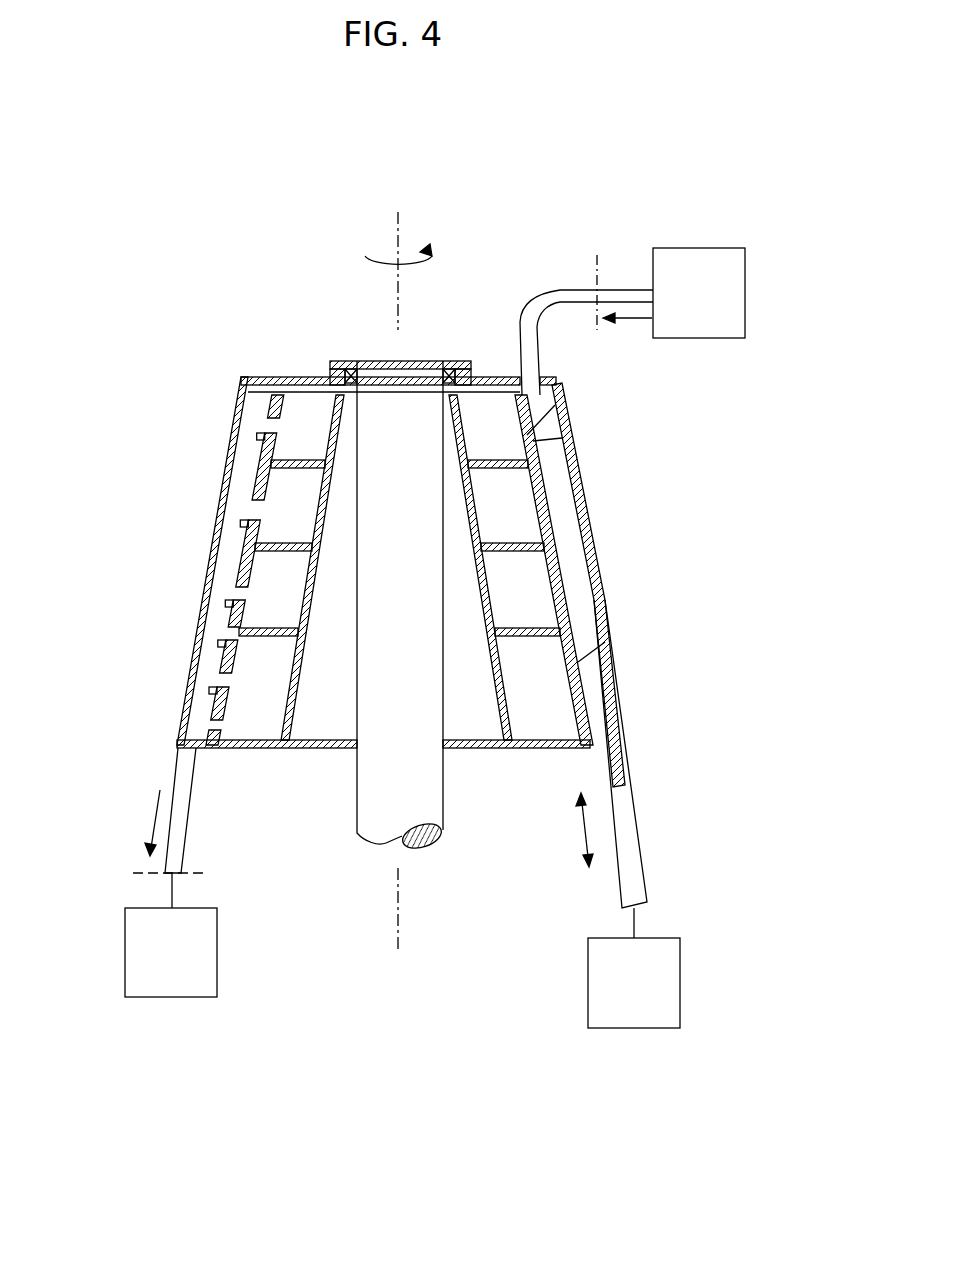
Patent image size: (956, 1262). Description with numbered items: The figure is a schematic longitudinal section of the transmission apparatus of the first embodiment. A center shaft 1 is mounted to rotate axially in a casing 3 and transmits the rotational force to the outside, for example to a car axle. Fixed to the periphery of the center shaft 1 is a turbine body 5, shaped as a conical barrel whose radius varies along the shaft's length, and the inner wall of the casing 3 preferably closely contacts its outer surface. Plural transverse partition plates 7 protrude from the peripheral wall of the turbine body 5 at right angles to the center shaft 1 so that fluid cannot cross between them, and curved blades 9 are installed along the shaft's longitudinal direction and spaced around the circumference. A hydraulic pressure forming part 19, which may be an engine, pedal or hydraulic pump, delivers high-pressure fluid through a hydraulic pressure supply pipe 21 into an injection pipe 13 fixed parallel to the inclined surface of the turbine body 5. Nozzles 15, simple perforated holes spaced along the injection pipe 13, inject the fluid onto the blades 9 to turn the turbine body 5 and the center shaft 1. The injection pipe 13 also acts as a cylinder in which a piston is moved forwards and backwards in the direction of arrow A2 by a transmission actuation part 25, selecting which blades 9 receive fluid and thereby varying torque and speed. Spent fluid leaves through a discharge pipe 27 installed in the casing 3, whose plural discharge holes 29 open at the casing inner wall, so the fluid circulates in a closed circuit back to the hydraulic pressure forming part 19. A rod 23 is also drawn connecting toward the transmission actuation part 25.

The center shaft 1 is at (427, 817).
The casing 3 is at (258, 367).
The turbine body 5 is at (498, 750).
The transverse partition plates 7 is at (222, 635).
The blades 9 is at (290, 457).
The injection pipe 13 is at (587, 533).
The nozzles 15 is at (540, 407).
The hydraulic pressure forming part 19 is at (716, 362).
The hydraulic pressure supply pipe 21 is at (530, 358).
The rod 23 is at (607, 790).
The transmission actuation part 25 is at (658, 975).
The discharge pipe 27 is at (220, 415).
The discharge holes 29 is at (243, 583).
The arrow A2 is at (586, 834).